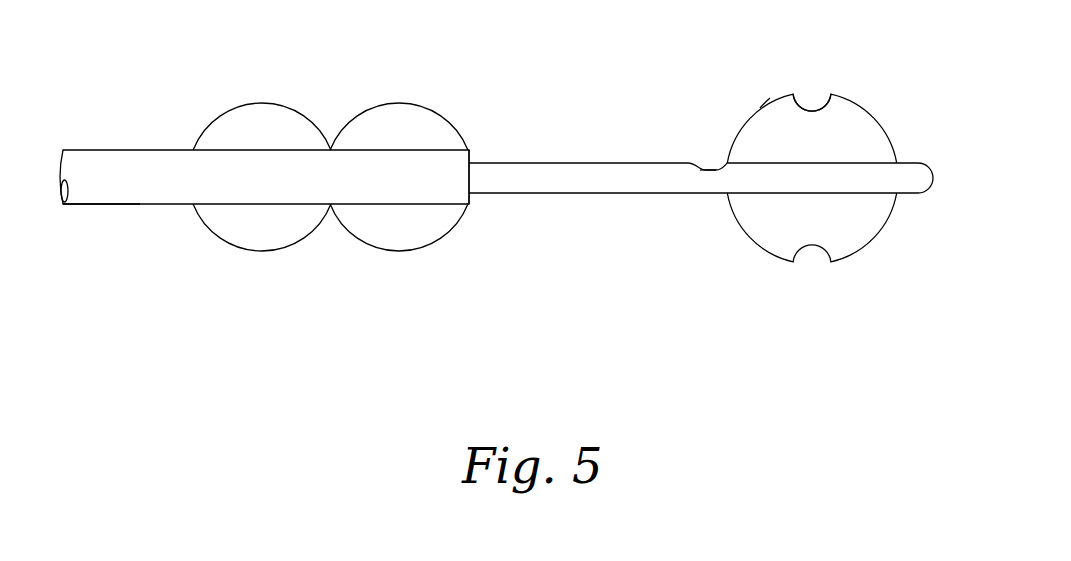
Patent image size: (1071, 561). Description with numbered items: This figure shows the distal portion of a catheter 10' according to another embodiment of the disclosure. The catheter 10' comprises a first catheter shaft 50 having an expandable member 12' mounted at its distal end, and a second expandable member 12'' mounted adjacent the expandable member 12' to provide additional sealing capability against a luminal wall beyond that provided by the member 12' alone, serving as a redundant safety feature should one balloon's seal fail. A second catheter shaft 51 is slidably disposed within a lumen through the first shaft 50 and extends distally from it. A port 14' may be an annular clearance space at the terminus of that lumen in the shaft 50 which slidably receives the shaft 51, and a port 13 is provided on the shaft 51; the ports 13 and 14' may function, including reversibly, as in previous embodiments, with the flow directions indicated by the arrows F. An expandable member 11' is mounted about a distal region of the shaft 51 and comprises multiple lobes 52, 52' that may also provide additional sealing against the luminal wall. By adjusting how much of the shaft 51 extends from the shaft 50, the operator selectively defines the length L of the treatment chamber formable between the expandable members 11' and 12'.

The catheter 10' is at (100, 246).
The first catheter shaft 50 is at (133, 150).
The second expandable member 12'' is at (262, 137).
The expandable member 12' is at (399, 137).
The port 14' is at (530, 196).
The second catheter shaft 51 is at (625, 194).
The port 13 is at (705, 168).
The expandable member 11' is at (838, 162).
The lobe 52 is at (752, 67).
The lobe 52' is at (813, 63).
The applied force F is at (472, 158).
The length of the treatment chamber L is at (796, 260).